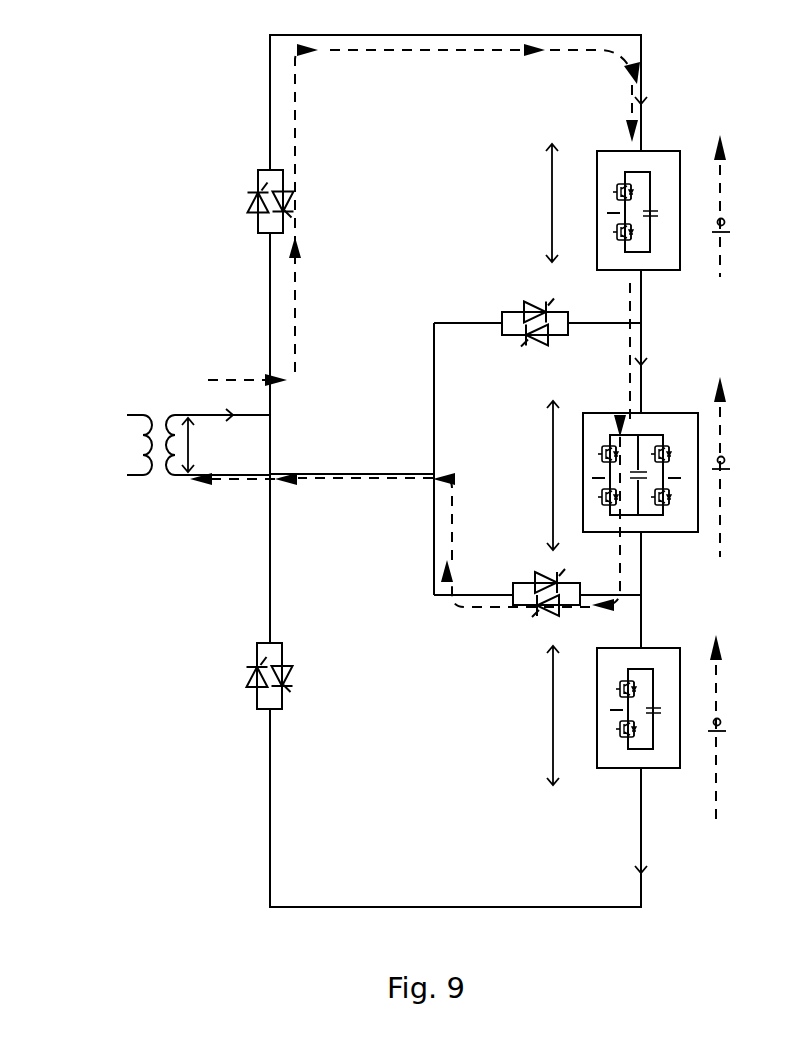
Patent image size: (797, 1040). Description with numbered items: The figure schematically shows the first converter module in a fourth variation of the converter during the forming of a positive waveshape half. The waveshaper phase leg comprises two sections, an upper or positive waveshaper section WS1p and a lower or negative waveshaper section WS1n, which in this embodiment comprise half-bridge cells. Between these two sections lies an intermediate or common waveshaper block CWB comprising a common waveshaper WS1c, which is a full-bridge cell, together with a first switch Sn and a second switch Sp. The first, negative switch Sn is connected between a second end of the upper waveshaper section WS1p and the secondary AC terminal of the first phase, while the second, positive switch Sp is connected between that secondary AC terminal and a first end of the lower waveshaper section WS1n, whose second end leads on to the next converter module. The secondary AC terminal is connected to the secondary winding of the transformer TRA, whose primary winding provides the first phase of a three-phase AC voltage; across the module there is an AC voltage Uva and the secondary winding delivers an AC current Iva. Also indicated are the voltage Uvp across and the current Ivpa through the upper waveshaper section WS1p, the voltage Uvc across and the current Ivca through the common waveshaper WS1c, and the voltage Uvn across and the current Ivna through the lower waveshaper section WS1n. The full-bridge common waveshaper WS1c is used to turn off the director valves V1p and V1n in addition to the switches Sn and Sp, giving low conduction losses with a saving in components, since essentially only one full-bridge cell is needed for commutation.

The transformer TRA is at (156, 445).
The director valve V1p is at (229, 201).
The director valve V1n is at (229, 676).
The upper waveshaper section WS1p is at (556, 210).
The lower waveshaper section WS1n is at (557, 708).
The common waveshaper WS1c is at (698, 532).
The common waveshaper block CWB is at (480, 459).
The first switch Sn is at (535, 339).
The second switch Sp is at (537, 574).
The AC voltage Uva is at (198, 445).
The AC current Iva is at (240, 403).
The voltage across upper waveshaper section Uvp is at (560, 203).
The voltage across lower waveshaper section Uvn is at (560, 715).
The voltage across common waveshaper Uvc is at (558, 475).
The current through upper waveshaper section Ivpa is at (618, 101).
The current through lower waveshaper section Ivna is at (665, 873).
The current through common waveshaper Ivca is at (667, 354).